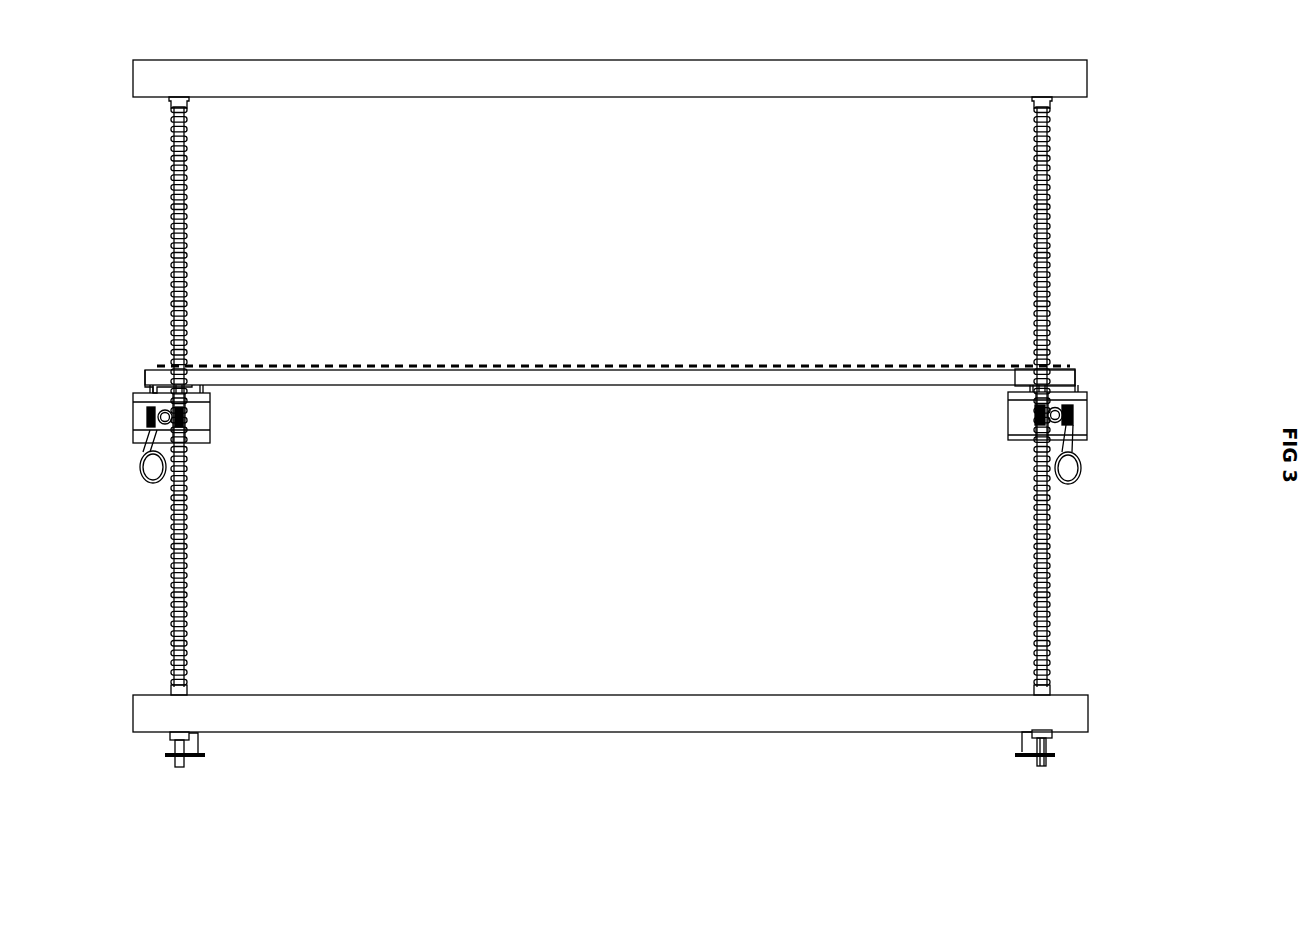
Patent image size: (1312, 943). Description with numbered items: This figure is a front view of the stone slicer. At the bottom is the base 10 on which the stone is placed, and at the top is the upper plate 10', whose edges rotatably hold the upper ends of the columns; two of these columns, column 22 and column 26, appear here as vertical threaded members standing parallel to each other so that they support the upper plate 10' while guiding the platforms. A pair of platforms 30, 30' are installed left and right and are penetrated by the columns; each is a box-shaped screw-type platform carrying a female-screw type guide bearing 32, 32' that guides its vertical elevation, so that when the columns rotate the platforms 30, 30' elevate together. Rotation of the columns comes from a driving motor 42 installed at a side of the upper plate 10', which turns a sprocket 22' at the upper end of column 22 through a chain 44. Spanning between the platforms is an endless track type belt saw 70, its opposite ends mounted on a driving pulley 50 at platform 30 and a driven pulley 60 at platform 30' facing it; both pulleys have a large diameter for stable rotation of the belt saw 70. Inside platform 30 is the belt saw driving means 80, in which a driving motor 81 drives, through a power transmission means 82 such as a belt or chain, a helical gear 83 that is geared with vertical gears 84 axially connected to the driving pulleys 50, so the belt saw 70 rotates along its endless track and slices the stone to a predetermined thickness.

The base 10 is at (610, 55).
The upper plate 10' is at (610, 757).
The column 22 is at (1020, 396).
The sprocket 22' is at (1042, 775).
The column 26 is at (171, 612).
The platform 30 is at (1023, 431).
The platform 30' is at (204, 437).
The guide bearing 32 is at (1018, 455).
The guide bearing 32' is at (200, 454).
The driving motor 42 is at (1022, 741).
The chain 44 is at (1018, 760).
The driving pulley 50 is at (1066, 395).
The driven pulley 60 is at (184, 392).
The belt saw 70 is at (888, 378).
The belt saw driving means 80 is at (1132, 384).
The driving motor 81 is at (1072, 482).
The power transmission means 82 is at (1077, 455).
The helical gear 83 is at (1074, 393).
The vertical gear 84 is at (1074, 416).